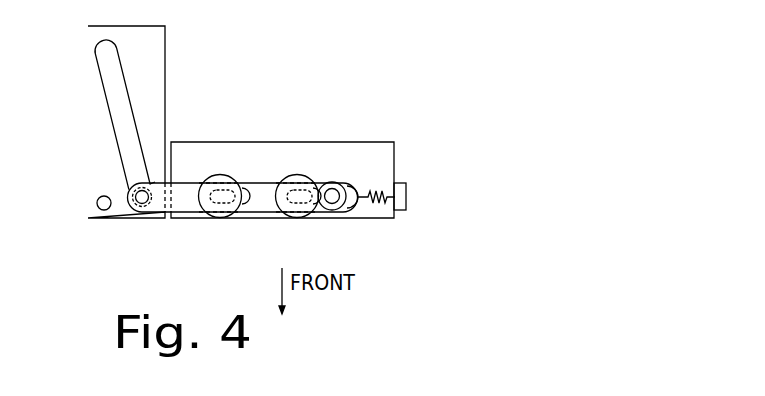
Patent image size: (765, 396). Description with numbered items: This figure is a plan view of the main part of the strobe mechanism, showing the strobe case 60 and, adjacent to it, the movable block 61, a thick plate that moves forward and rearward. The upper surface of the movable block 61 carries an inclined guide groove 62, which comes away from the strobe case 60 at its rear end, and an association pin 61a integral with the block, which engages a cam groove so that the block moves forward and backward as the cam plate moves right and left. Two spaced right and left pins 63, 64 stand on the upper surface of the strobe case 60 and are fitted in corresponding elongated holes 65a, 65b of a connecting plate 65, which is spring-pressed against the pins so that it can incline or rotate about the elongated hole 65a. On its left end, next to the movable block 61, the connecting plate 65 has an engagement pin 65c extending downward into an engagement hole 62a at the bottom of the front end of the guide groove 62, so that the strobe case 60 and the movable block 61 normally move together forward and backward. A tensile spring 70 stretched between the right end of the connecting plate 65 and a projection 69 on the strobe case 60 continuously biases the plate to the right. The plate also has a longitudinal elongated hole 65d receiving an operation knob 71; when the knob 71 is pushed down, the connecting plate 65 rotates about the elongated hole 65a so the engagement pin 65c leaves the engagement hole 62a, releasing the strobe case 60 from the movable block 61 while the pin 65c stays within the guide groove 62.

The strobe case 60 is at (385, 160).
The movable block 61 is at (91, 42).
The association pin 61a is at (103, 212).
The inclined guide groove 62 is at (118, 132).
The engagement hole 62a is at (152, 218).
The pin 63 is at (216, 218).
The pin 64 is at (290, 218).
The connecting plate 65 is at (262, 188).
The elongated hole 65a is at (244, 188).
The elongated hole 65b is at (309, 186).
The engagement pin 65c is at (154, 182).
The elongated hole 65d is at (350, 183).
The projection 69 is at (406, 196).
The tensile spring 70 is at (378, 189).
The operation knob 71 is at (333, 201).